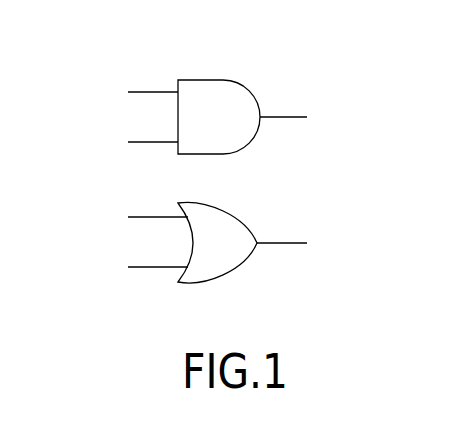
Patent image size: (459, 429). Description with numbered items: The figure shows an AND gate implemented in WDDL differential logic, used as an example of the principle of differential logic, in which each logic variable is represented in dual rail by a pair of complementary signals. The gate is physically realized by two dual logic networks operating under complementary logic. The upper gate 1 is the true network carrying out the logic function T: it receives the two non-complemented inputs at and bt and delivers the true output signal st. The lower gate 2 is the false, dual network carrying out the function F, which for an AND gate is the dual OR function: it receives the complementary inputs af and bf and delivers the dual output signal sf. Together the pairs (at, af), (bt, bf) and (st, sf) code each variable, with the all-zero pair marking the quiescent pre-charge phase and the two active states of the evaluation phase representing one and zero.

The true logic network gate 1 is at (246, 88).
The false dual logic network gate 2 is at (230, 280).
The true signal of input a at is at (138, 86).
The true signal of input b bt is at (138, 141).
The true output signal st is at (298, 116).
The false signal of input a af is at (143, 215).
The false signal of input b bf is at (143, 266).
The false output signal sf is at (297, 244).